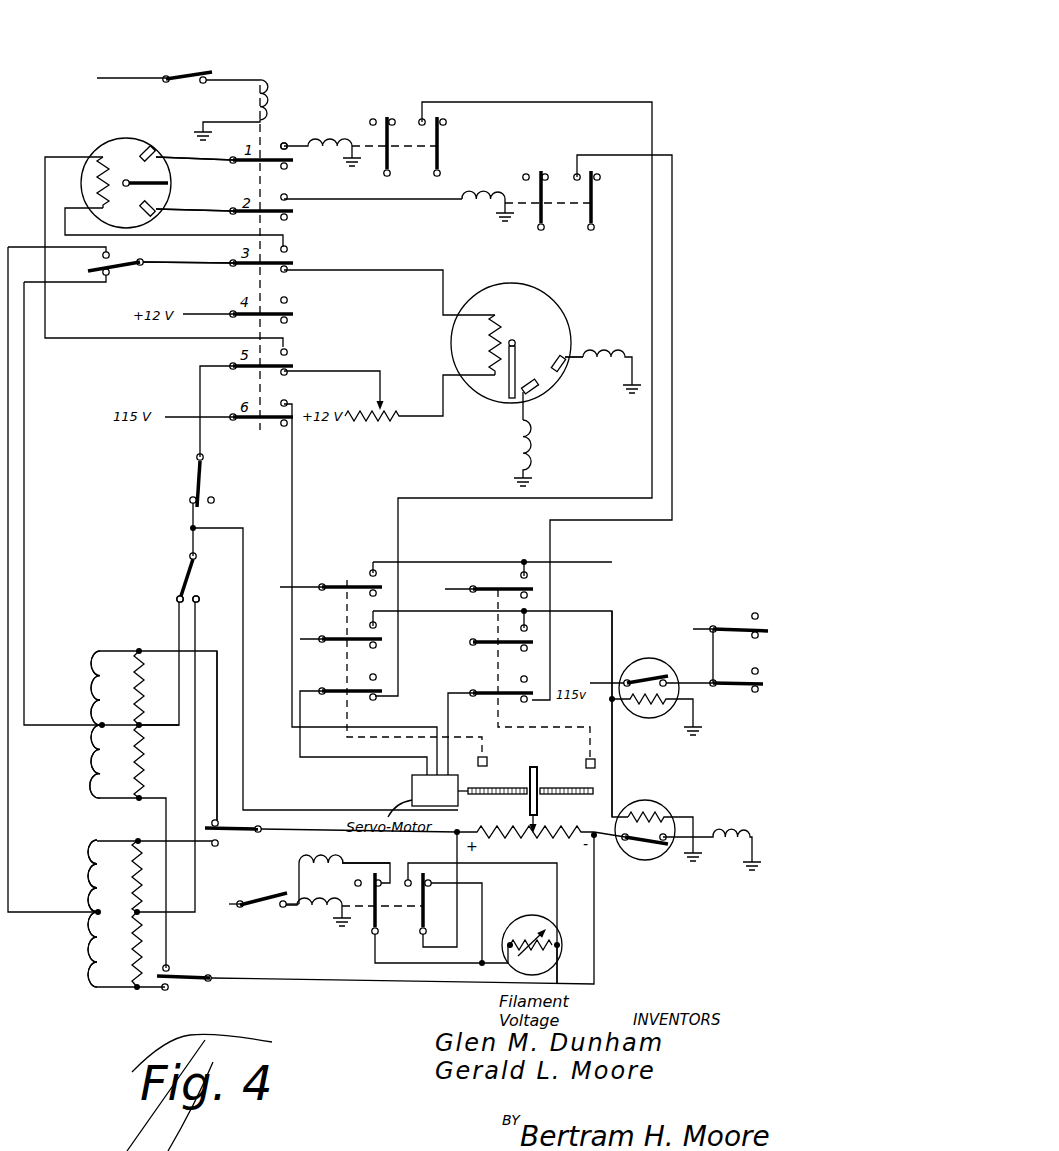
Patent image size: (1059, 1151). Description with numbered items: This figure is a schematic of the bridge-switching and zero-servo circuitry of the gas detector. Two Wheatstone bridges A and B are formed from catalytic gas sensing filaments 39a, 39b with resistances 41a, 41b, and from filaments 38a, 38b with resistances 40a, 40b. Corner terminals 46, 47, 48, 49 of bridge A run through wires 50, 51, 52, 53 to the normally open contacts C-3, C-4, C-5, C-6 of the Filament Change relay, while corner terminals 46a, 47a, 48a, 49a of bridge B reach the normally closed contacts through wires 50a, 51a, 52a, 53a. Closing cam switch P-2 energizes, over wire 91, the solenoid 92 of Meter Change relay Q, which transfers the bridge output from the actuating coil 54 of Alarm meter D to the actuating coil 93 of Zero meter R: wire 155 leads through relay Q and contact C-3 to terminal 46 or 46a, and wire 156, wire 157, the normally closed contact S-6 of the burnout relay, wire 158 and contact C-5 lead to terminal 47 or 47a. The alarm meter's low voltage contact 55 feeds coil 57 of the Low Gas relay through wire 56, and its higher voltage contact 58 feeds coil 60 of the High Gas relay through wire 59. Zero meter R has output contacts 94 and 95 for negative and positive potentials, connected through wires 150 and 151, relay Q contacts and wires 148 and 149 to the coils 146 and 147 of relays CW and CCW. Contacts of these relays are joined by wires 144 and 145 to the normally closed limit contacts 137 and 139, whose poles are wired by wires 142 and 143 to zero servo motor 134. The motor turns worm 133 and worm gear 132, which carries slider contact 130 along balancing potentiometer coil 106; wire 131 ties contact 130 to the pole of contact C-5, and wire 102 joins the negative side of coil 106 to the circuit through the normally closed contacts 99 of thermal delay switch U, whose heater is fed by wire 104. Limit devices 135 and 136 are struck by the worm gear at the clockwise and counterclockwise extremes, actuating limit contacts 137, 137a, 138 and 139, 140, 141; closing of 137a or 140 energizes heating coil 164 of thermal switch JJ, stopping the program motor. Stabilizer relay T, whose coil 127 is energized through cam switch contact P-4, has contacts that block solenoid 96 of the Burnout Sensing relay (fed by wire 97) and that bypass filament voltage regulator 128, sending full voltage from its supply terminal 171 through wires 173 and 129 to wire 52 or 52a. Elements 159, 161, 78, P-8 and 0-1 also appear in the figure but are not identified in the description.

The cam switch P-2 is at (163, 75).
The wire 91 is at (240, 78).
The Meter Change relay Q is at (279, 70).
The solenoid 92 is at (272, 99).
The Zero meter R is at (121, 138).
The actuating coil 93 is at (93, 183).
The output contact 94 is at (145, 143).
The output contact 95 is at (164, 206).
The wire 151 is at (181, 158).
The wire 150 is at (213, 208).
The wire 155 is at (273, 236).
The wire 156 is at (74, 340).
The relay coil 147 is at (335, 137).
The wire 149 is at (287, 143).
The wire 148 is at (306, 200).
The relay coil 146 is at (484, 194).
The counterclockwise relay CCW is at (402, 98).
The clockwise relay CW is at (553, 162).
The wire 145 is at (652, 127).
The wire 144 is at (672, 178).
The wire 157 is at (200, 390).
The relay contact S-6 is at (186, 480).
The wire 158 is at (192, 518).
The wire 131 is at (227, 528).
The relay contact C-5 is at (173, 577).
The wire 51a is at (178, 604).
The wire 51 is at (198, 605).
The wire 52a is at (218, 742).
The corner terminal 48a is at (139, 648).
The Wheatstone bridge B is at (76, 742).
The catalytic gas sensing filament 38a is at (96, 685).
The catalytic gas sensing filament 38b is at (95, 760).
The resistance 40a is at (128, 683).
The resistance 40b is at (142, 768).
The corner terminal 46a is at (100, 724).
The corner terminal 47a is at (141, 728).
The corner terminal 49a is at (141, 797).
The wire 53a is at (166, 823).
The corner terminal 48 is at (137, 840).
The wire 50 is at (8, 488).
The wire 50a is at (25, 440).
The relay contact C-3 is at (160, 268).
The wire 52 is at (170, 267).
The relay contact C-4 is at (233, 836).
The actuating solenoid 96 is at (312, 856).
The wire 97 is at (374, 861).
The wire 129 is at (454, 838).
The stabilizer relay T is at (348, 947).
The actuating coil 127 is at (320, 911).
The Program Cam switch contact P-4 is at (247, 911).
The wire 173 is at (492, 866).
The filament voltage regulator 128 is at (540, 912).
The supply terminal 171 is at (560, 945).
The wire 102 is at (594, 919).
The bridge balancing potentiometer coil 106 is at (512, 840).
The zero servo motor 134 is at (412, 792).
The wire 143 is at (315, 757).
The wire 142 is at (448, 712).
The worm gear 132 is at (527, 785).
The worm 133 is at (546, 784).
The voltage divider contact 130 is at (540, 818).
The counterclockwise limit device 136 is at (489, 766).
The clockwise limit device 135 is at (587, 763).
The limit switch contacts 141 is at (315, 578).
The limit switch contacts 140 is at (341, 629).
The limit switch contacts 139 is at (347, 682).
The limit switch contacts 138 is at (471, 580).
The limit switch contacts 137a is at (485, 631).
The limit switch contacts 137 is at (488, 684).
The conductor 159 is at (410, 560).
The conductor 161 is at (577, 562).
The wire 104 is at (608, 722).
The thermal switch JJ is at (653, 655).
The heating coil 164 is at (647, 707).
The conductor 78 is at (596, 680).
The switch P-8 is at (717, 649).
The switch 0-1 is at (738, 689).
The thermal delay switch U is at (654, 800).
The normally closed contacts 99 is at (650, 848).
The Alarm meter D is at (537, 284).
The actuating coil 54 is at (503, 328).
The wire 59 is at (517, 414).
The relay coil 57 is at (519, 443).
The higher voltage contact 58 is at (544, 400).
The low voltage contact 55 is at (564, 381).
The wire 56 is at (577, 355).
The relay coil 60 is at (607, 347).
The Wheatstone bridge A is at (76, 968).
The catalytic gas sensing filament 39a is at (93, 874).
The catalytic gas sensing filament 39b is at (93, 947).
The resistance 41a is at (143, 878).
The resistance 41b is at (133, 950).
The corner terminal 46 is at (97, 911).
The corner terminal 47 is at (135, 912).
The corner terminal 49 is at (136, 990).
The wire 53 is at (167, 991).
The relay contact C-6 is at (184, 968).